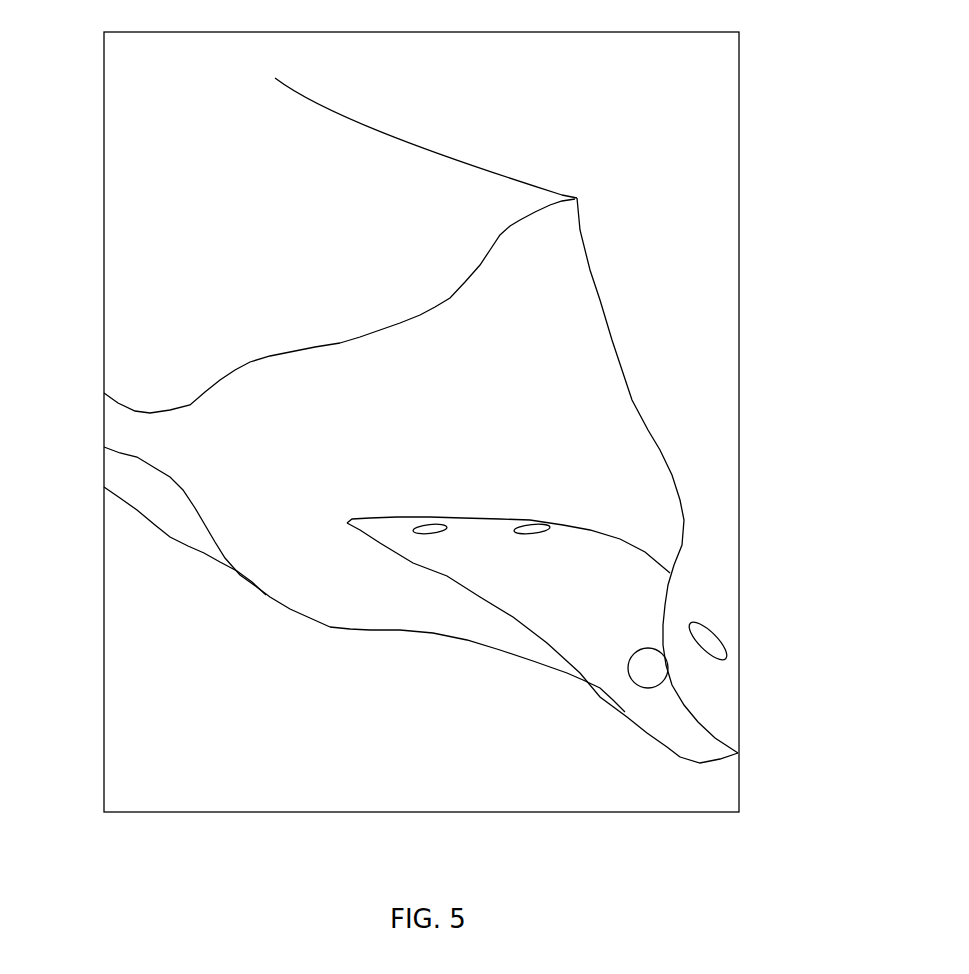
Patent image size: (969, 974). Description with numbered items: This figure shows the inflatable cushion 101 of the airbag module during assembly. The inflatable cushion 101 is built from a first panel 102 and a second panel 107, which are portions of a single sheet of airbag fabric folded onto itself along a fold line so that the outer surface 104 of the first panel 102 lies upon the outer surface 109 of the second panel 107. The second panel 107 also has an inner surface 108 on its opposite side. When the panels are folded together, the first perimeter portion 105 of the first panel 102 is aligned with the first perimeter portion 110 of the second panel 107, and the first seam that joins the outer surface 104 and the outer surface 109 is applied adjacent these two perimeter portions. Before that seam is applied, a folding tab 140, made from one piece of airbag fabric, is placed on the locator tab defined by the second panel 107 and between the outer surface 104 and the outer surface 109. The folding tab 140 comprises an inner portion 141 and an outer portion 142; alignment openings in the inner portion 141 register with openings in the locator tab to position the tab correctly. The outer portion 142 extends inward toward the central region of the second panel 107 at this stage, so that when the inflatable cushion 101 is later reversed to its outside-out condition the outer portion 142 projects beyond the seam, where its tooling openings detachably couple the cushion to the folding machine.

The inflatable cushion 101 is at (759, 142).
The first panel 102 is at (275, 460).
The outer surface 104 is at (292, 530).
The first perimeter portion 105 is at (330, 625).
The second panel 107 is at (645, 170).
The inner surface 108 is at (292, 242).
The outer surface 109 is at (530, 325).
The first perimeter portion 110 is at (612, 342).
The folding tab 140 is at (573, 595).
The inner portion 141 is at (680, 717).
The outer portion 142 is at (465, 548).